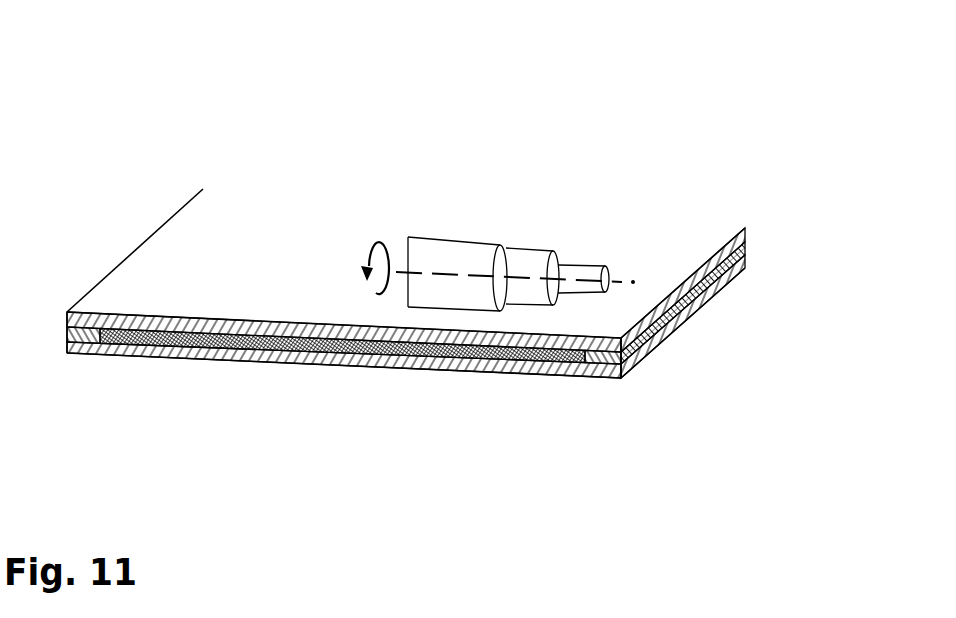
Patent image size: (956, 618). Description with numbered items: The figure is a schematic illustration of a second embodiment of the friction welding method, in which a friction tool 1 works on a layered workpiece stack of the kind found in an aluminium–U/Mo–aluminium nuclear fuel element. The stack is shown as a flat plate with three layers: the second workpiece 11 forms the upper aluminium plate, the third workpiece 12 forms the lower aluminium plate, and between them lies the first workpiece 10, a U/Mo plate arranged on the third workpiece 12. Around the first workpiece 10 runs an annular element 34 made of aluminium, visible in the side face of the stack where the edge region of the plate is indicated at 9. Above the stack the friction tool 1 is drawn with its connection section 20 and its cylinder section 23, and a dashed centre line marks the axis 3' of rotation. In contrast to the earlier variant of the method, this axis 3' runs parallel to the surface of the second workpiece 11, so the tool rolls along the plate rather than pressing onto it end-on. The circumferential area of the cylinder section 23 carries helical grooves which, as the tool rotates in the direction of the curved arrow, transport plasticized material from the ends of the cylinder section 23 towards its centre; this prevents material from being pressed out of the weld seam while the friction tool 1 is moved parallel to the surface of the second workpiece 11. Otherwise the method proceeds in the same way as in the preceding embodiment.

The friction tool 1 is at (588, 180).
The axis of rotation 3' is at (576, 179).
The side edge face of panel 9 is at (724, 329).
The first workpiece 10 is at (508, 353).
The second workpiece 11 is at (363, 332).
The third workpiece 12 is at (424, 362).
The connection section 20 is at (531, 255).
The cylinder section 23 is at (443, 247).
The annular element 34 is at (658, 328).